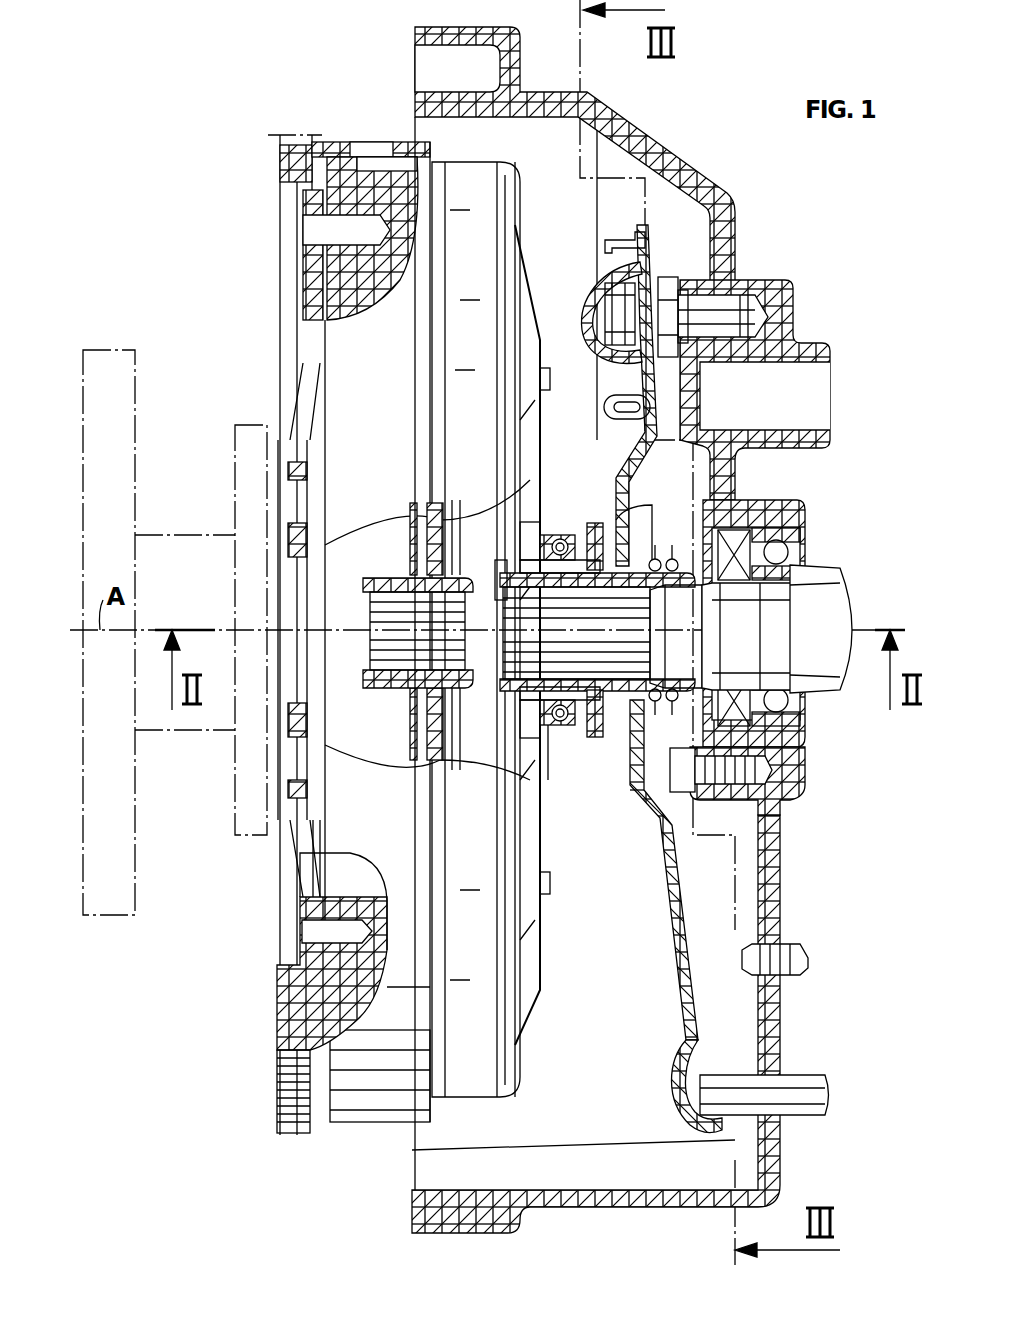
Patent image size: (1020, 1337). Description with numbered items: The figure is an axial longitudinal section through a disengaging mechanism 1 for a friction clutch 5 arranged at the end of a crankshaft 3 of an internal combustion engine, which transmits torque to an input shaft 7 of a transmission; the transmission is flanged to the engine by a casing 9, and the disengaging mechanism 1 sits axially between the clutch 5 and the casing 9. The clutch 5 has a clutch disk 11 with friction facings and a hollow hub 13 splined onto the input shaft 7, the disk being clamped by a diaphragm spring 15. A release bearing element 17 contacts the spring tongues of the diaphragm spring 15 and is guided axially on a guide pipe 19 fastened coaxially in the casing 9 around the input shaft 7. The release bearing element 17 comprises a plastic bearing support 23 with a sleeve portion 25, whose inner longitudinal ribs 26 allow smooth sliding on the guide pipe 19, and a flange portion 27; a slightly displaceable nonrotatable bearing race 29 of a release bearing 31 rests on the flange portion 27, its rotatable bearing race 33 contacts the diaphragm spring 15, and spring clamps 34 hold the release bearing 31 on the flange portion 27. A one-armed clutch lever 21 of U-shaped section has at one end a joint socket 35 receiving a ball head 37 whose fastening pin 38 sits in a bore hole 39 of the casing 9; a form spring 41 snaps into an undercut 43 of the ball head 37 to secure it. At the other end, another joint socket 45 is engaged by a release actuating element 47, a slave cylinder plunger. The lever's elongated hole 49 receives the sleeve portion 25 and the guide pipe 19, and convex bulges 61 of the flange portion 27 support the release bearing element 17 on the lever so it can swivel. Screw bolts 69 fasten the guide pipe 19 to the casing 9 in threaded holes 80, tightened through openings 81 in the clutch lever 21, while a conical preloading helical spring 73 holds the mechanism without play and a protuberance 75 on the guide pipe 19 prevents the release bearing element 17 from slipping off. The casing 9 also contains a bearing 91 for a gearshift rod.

The disengaging mechanism 1 is at (571, 843).
The crankshaft 3 is at (190, 530).
The friction clutch 5 is at (268, 300).
The input shaft 7 is at (848, 592).
The casing 9 is at (668, 152).
The clutch disk 11 is at (410, 720).
The hollow hub 13 is at (410, 578).
The diaphragm spring 15 is at (513, 503).
The release bearing element 17 is at (550, 780).
The guide pipe 19 is at (505, 690).
The clutch lever 21 is at (672, 930).
The bearing support 23 is at (625, 530).
The sleeve portion 25 is at (594, 737).
The longitudinal ribs 26 is at (545, 715).
The flange portion 27 is at (568, 543).
The nonrotatable bearing race 29 is at (560, 722).
The release bearing 31 is at (527, 475).
The rotatable bearing race 33 is at (540, 548).
The spring clamps 34 is at (590, 530).
The joint socket 35 is at (598, 290).
The ball head 37 is at (672, 282).
The fastening pin 38 is at (760, 312).
The bore hole 39 is at (732, 292).
The form spring 41 is at (615, 237).
The undercut 43 is at (606, 405).
The joint socket 45 is at (676, 1090).
The release actuating element 47 is at (815, 1082).
The elongated hole 49 is at (656, 560).
The convex bulges 61 is at (650, 610).
The screw bolts 69 is at (745, 750).
The conical preloading helical spring 73 is at (752, 507).
The protuberance 75 is at (503, 575).
The threaded holes 80 is at (765, 772).
The openings 81 is at (628, 790).
The bearing 91 is at (820, 380).